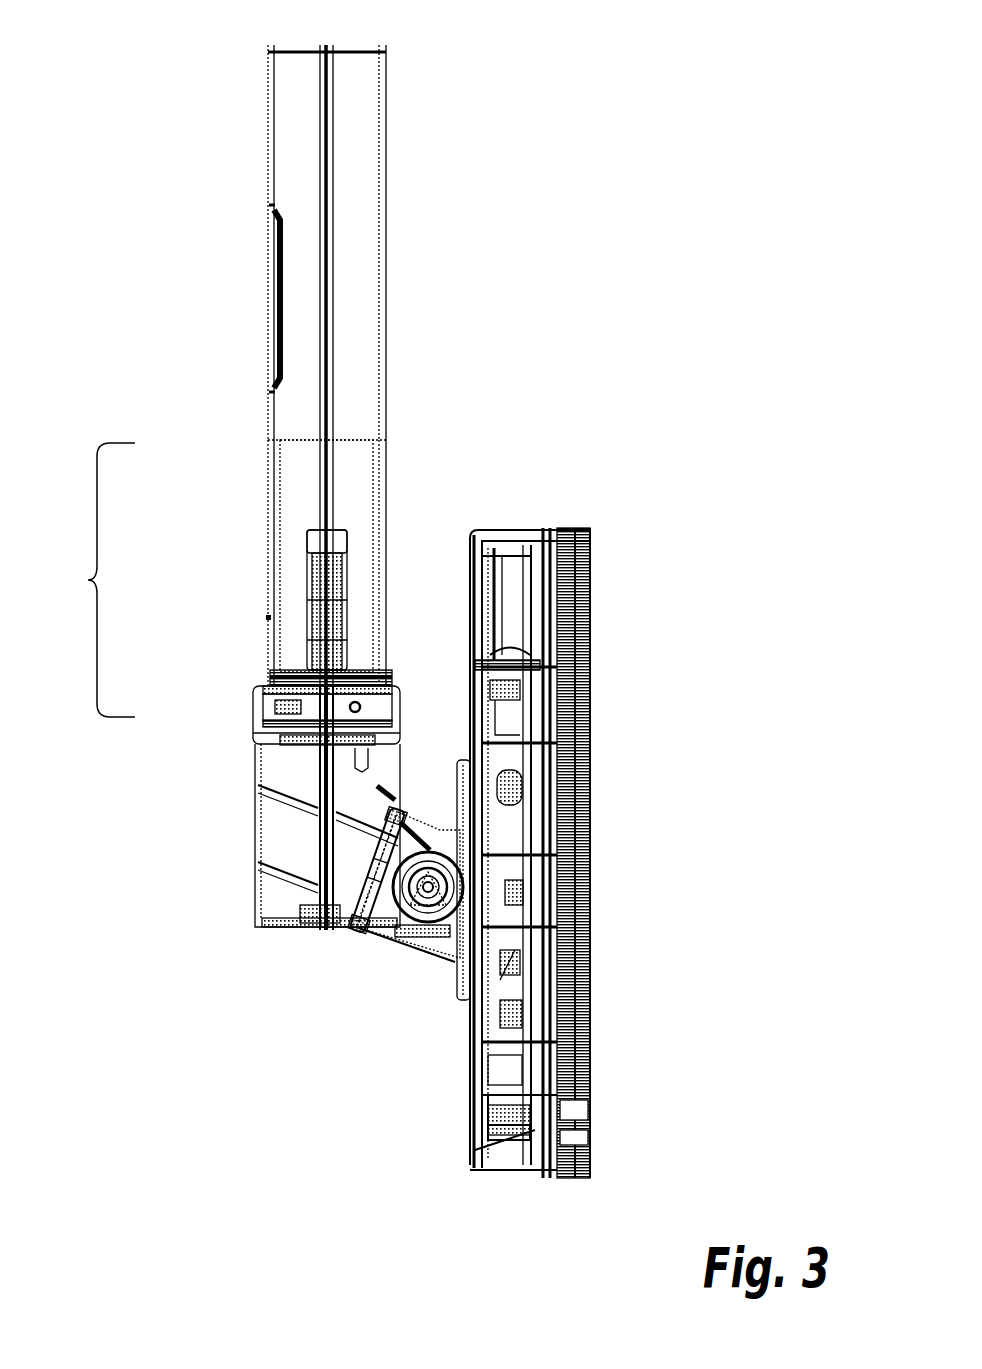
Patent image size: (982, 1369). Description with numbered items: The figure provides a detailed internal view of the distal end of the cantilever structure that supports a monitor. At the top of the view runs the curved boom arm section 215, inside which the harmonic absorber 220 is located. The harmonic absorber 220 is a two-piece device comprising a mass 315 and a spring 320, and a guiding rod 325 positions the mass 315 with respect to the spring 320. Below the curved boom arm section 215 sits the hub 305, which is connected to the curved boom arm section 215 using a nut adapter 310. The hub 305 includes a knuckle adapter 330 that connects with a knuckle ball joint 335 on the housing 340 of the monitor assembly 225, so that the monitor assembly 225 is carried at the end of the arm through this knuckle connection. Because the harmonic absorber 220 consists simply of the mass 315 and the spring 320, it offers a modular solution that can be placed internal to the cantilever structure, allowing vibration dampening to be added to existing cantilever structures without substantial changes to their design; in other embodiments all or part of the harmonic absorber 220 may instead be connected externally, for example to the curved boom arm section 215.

The curved boom arm section 215 is at (354, 297).
The monitor assembly 225 is at (558, 527).
The harmonic absorber 220 is at (87, 580).
The hub 305 is at (282, 832).
The nut adapter 310 is at (308, 708).
The mass 315 is at (367, 449).
The spring 320 is at (292, 678).
The guiding rod 325 is at (318, 540).
The knuckle adapter 330 is at (370, 845).
The knuckle ball joint 335 is at (362, 925).
The housing 340 is at (424, 973).